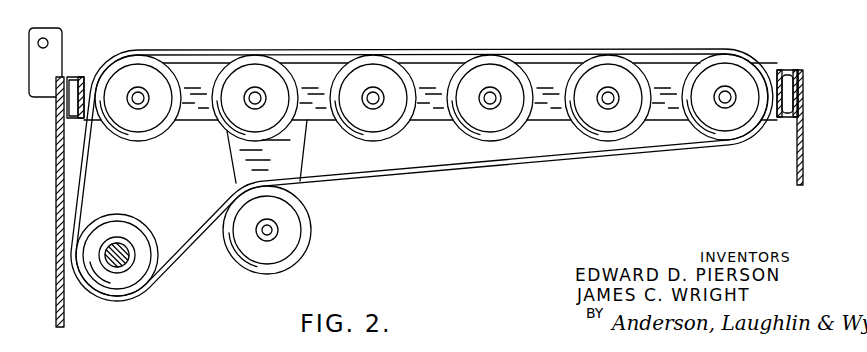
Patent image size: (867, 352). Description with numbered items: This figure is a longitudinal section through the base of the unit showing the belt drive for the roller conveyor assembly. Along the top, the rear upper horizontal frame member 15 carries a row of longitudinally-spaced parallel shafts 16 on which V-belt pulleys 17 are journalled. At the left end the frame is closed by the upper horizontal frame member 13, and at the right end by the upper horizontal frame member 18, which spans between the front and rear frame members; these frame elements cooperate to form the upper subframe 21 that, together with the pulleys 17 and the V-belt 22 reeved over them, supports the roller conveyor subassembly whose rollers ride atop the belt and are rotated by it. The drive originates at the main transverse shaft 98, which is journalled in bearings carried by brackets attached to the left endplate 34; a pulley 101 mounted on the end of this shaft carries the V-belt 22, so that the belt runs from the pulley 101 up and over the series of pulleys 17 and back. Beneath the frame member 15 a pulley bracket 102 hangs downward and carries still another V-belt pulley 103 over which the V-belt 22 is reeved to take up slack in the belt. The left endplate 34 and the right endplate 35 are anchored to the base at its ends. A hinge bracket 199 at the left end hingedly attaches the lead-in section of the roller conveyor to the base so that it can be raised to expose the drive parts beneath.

The hinge bracket 199 is at (55, 53).
The upper horizontal frame member 13 is at (70, 77).
The endplate 34 is at (58, 196).
The endplate 35 is at (797, 148).
The upper horizontal frame member 18 is at (785, 71).
The upper subframe 21 is at (677, 48).
The rear upper horizontal frame member 15 is at (435, 121).
The V-belt pulley 17 is at (163, 115).
The shaft 16 is at (374, 97).
The pulley bracket 102 is at (273, 160).
The V-belt 22 is at (527, 160).
The V-belt pulley 103 is at (288, 240).
The pulley 101 is at (142, 262).
The main transverse shaft 98 is at (131, 256).